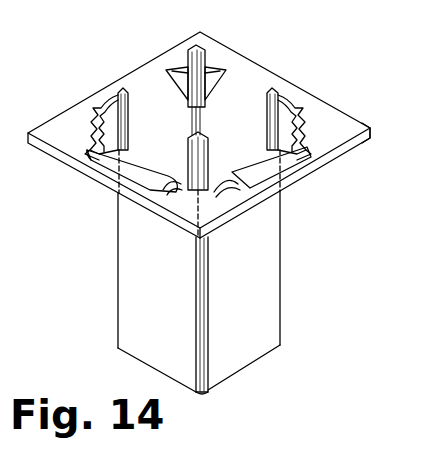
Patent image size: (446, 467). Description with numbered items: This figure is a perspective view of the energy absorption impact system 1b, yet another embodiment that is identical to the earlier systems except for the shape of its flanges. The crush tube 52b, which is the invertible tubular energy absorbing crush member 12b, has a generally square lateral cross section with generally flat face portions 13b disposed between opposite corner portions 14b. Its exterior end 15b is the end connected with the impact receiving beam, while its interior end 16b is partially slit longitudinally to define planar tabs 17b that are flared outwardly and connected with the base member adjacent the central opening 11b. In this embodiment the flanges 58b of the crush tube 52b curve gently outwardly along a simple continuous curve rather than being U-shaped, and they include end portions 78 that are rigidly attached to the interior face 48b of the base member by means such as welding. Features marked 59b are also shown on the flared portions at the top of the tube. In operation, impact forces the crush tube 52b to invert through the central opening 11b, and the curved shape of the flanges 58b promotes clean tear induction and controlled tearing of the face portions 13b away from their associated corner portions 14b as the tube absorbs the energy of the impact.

The energy absorption impact system 1b is at (267, 36).
The central opening 11b is at (222, 135).
The crush member 12b is at (196, 292).
The face portions 13b is at (127, 253).
The corner portions 14b is at (204, 370).
The exterior end 15b is at (275, 350).
The interior end 16b is at (186, 47).
The planar tabs 17b is at (242, 92).
The interior face 48b is at (364, 127).
The crush tube 52b is at (147, 365).
The flanges 58b is at (134, 82).
The rod end / retaining finger 59b is at (100, 92).
The end portions 78 is at (103, 153).